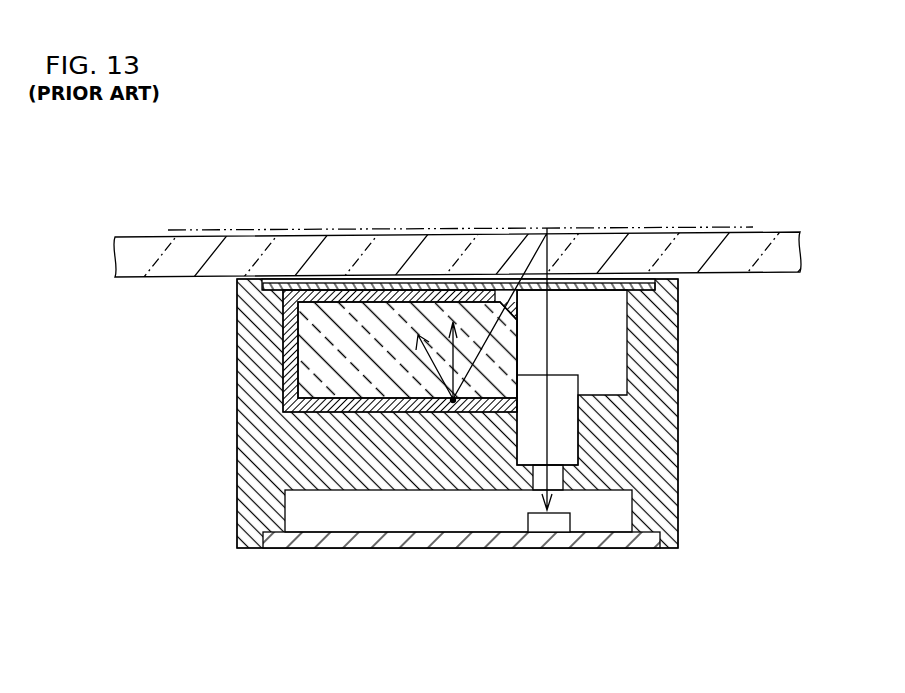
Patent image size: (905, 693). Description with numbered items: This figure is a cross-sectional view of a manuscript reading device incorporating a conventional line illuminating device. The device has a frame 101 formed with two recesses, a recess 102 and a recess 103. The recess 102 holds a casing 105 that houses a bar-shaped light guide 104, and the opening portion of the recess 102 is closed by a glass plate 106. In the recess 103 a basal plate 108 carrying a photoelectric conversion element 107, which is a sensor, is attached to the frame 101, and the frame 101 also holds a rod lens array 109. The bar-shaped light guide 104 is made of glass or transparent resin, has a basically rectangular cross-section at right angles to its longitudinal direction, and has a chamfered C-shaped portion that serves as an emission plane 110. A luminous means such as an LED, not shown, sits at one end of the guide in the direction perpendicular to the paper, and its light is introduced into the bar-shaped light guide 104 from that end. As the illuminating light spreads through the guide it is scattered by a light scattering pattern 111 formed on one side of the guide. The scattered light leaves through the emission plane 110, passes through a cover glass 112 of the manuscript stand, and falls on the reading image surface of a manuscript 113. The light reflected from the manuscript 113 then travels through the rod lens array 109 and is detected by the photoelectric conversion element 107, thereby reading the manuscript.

The frame 101 is at (263, 444).
The recess 102 is at (628, 330).
The recess 103 is at (287, 507).
The bar-shaped light guide 104 is at (365, 332).
The casing 105 is at (283, 350).
The glass plate 106 is at (602, 286).
The photoelectric conversion element 107 is at (548, 522).
The basal plate 108 is at (613, 542).
The rod lens array 109 is at (565, 424).
The emission plane 110 is at (503, 305).
The light scattering pattern 111 is at (454, 403).
The cover glass 112 is at (150, 247).
The manuscript 113 is at (248, 228).